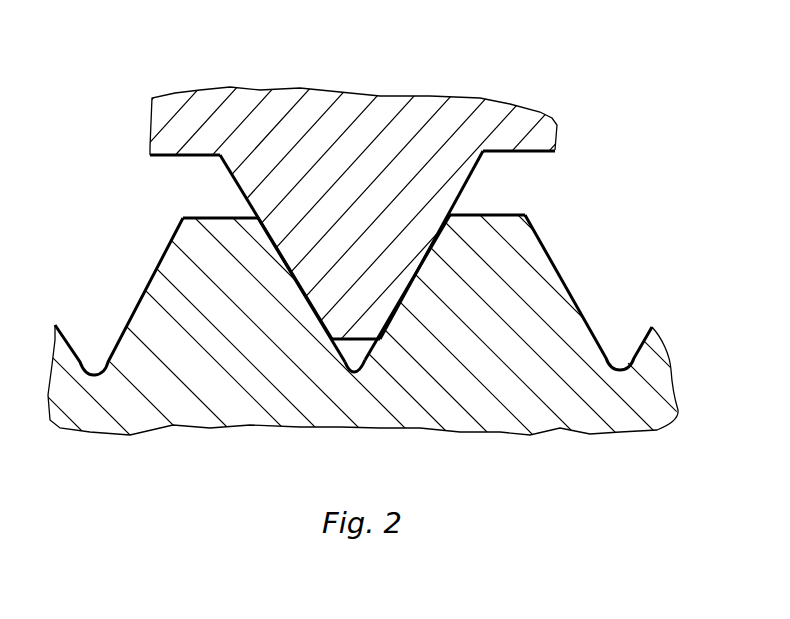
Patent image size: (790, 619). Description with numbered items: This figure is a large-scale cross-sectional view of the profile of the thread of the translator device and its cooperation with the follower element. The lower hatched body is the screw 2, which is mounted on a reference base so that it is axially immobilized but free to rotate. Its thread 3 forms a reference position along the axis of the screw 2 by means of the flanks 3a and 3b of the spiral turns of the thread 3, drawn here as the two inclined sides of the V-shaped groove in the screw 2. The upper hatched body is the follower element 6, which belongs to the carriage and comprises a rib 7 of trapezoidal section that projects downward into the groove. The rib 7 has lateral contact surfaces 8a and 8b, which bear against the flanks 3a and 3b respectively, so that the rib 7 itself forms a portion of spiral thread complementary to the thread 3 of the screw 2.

The screw 2 is at (370, 324).
The thread 3 is at (373, 293).
The flank 3a is at (298, 283).
The flank 3b is at (417, 279).
The follower element 6 is at (379, 193).
The rib 7 is at (379, 188).
The lateral contact surface 8a is at (242, 188).
The lateral contact surface 8b is at (458, 193).